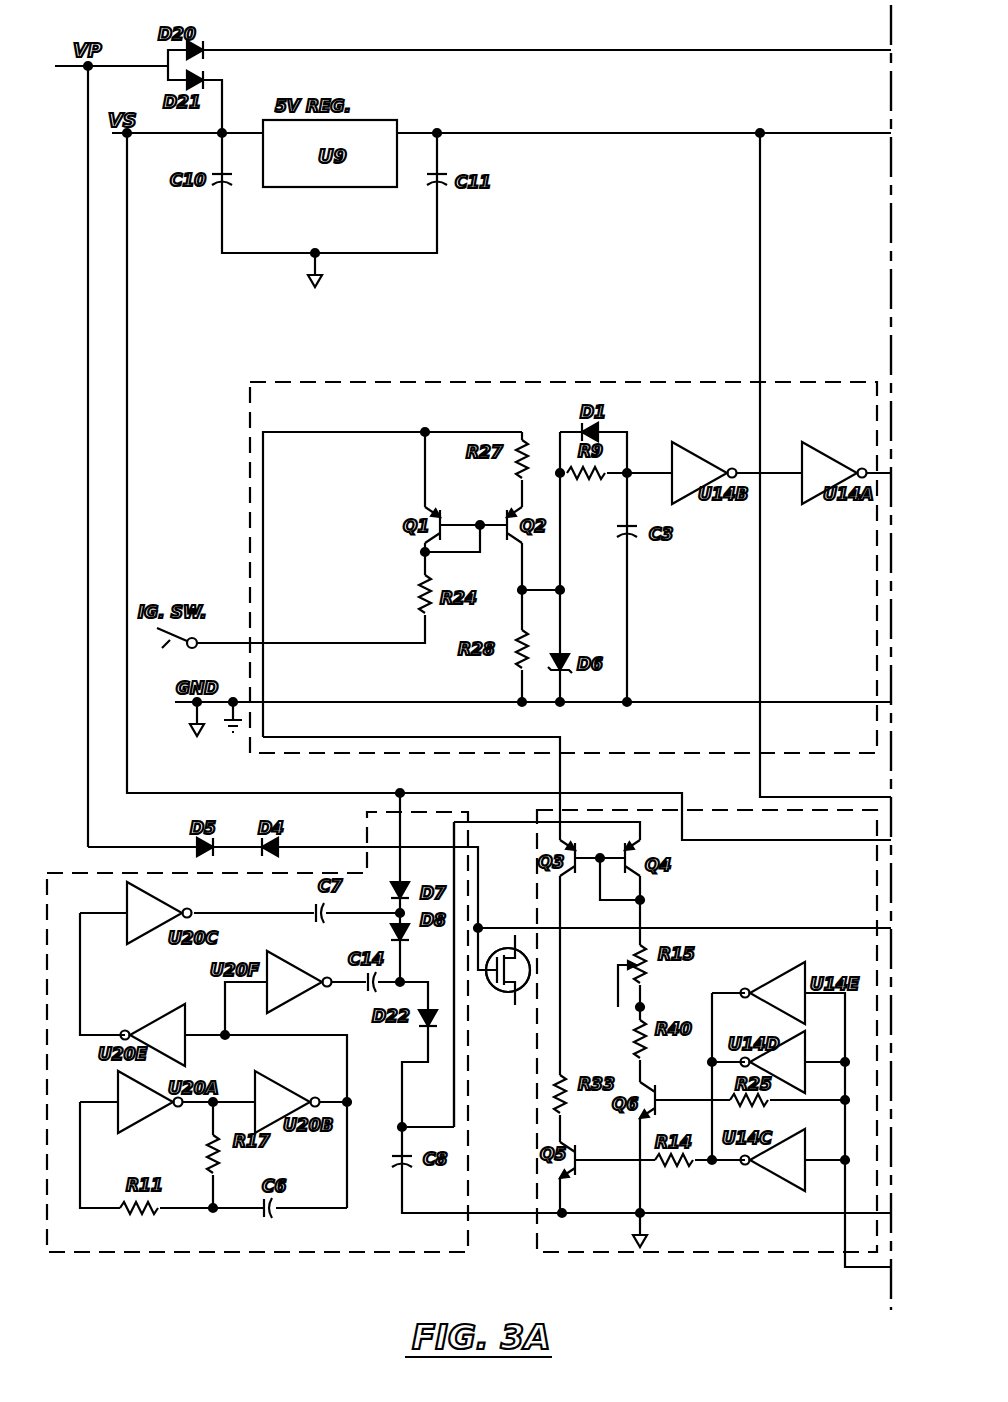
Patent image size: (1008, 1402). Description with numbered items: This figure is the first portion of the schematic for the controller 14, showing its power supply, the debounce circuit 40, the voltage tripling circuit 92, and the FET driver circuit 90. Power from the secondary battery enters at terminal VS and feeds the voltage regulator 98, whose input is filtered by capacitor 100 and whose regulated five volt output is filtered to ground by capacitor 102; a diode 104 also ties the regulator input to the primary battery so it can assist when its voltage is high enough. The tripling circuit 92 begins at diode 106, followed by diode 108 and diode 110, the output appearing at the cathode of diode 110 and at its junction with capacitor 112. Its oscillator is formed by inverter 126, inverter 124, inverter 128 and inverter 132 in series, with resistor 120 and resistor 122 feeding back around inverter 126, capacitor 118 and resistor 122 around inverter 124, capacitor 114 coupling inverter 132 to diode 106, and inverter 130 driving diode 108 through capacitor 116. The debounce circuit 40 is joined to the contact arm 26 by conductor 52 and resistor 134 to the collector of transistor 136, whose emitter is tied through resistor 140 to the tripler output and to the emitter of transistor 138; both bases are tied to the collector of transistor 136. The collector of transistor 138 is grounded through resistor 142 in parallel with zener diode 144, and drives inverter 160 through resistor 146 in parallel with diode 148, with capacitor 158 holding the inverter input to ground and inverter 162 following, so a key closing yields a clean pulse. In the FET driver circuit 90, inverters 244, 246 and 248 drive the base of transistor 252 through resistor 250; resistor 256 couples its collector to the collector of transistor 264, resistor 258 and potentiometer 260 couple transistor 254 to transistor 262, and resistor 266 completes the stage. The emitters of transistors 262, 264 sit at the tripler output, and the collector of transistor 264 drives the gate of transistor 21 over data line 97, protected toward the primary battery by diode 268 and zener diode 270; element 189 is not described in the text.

The diode D20 189 is at (205, 45).
The diode 104 is at (205, 77).
The voltage regulator 98 is at (387, 120).
The capacitor 100 is at (215, 190).
The capacitor 102 is at (443, 190).
The debounce circuit 40 is at (500, 380).
The diode 148 is at (605, 425).
The resistor 140 is at (515, 476).
The transistor 136 is at (428, 512).
The transistor 138 is at (515, 545).
The resistor 146 is at (582, 480).
The inverter 160 is at (705, 465).
The inverter 162 is at (823, 465).
The capacitor 158 is at (634, 540).
The resistor 134 is at (418, 597).
The conductor 52 is at (335, 643).
The resistor 142 is at (515, 668).
The zener diode 144 is at (567, 650).
The contact arm 26 is at (163, 648).
The zener diode 270 is at (190, 845).
The diode 268 is at (285, 845).
The inverter 132 is at (160, 900).
The capacitor 114 is at (312, 905).
The inverter 130 is at (300, 942).
The inverter 128 is at (152, 1025).
The capacitor 116 is at (366, 990).
The diode 106 is at (408, 888).
The diode 108 is at (392, 932).
The diode 110 is at (420, 1030).
The inverter 124 is at (275, 1080).
The inverter 126 is at (150, 1118).
The resistor 122 is at (222, 1165).
The resistor 120 is at (148, 1215).
The capacitor 118 is at (280, 1215).
The transistor 264 is at (560, 865).
The transistor 262 is at (650, 870).
The potentiometer 260 is at (652, 978).
The inverter 244 is at (782, 975).
The inverter 246 is at (782, 1040).
The resistor 258 is at (633, 1040).
The transistor 254 is at (658, 1085).
The resistor 266 is at (745, 1105).
The resistor 256 is at (566, 1110).
The transistor 252 is at (574, 1178).
The resistor 250 is at (668, 1165).
The inverter 248 is at (780, 1180).
The transistor 21 is at (506, 1000).
The data line 97 is at (455, 1070).
The capacitor 112 is at (408, 1168).
The voltage tripling circuit 92 is at (420, 1252).
The FET driver circuit 90 is at (600, 1252).
The controller 14 is at (712, 1258).